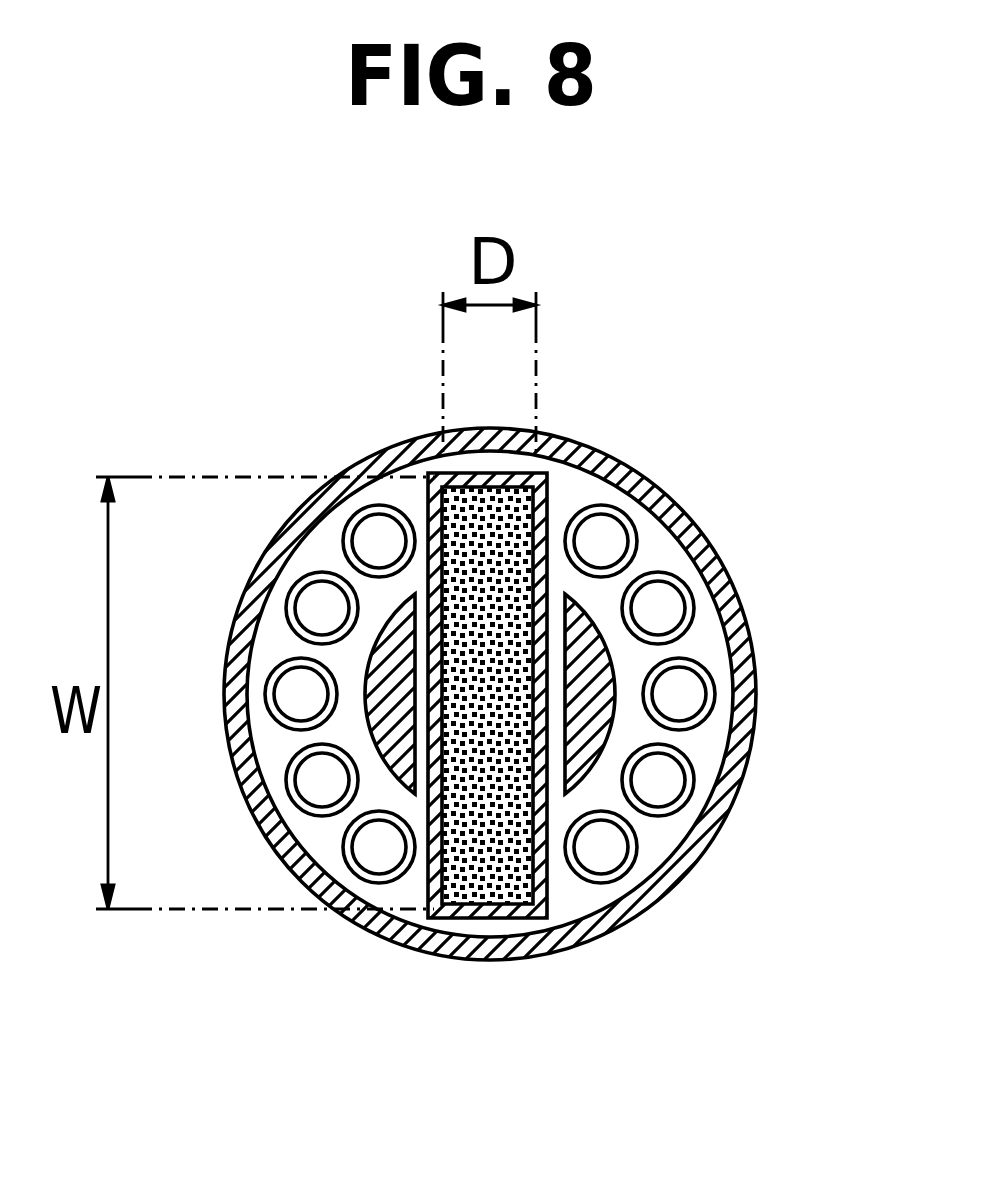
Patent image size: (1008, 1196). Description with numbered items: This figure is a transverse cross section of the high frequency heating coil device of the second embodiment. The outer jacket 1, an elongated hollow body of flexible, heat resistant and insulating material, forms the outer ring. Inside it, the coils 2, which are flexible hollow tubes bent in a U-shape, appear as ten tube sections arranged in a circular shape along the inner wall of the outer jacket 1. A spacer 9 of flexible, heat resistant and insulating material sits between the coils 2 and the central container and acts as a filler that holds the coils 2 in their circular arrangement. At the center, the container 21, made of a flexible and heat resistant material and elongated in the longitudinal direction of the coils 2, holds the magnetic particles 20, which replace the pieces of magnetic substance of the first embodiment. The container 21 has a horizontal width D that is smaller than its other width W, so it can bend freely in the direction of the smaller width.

The outer jacket 1 is at (602, 456).
The coil 2 is at (628, 515).
The spacer 9 is at (610, 735).
The magnetic particles 20 is at (548, 895).
The container 21 is at (494, 962).